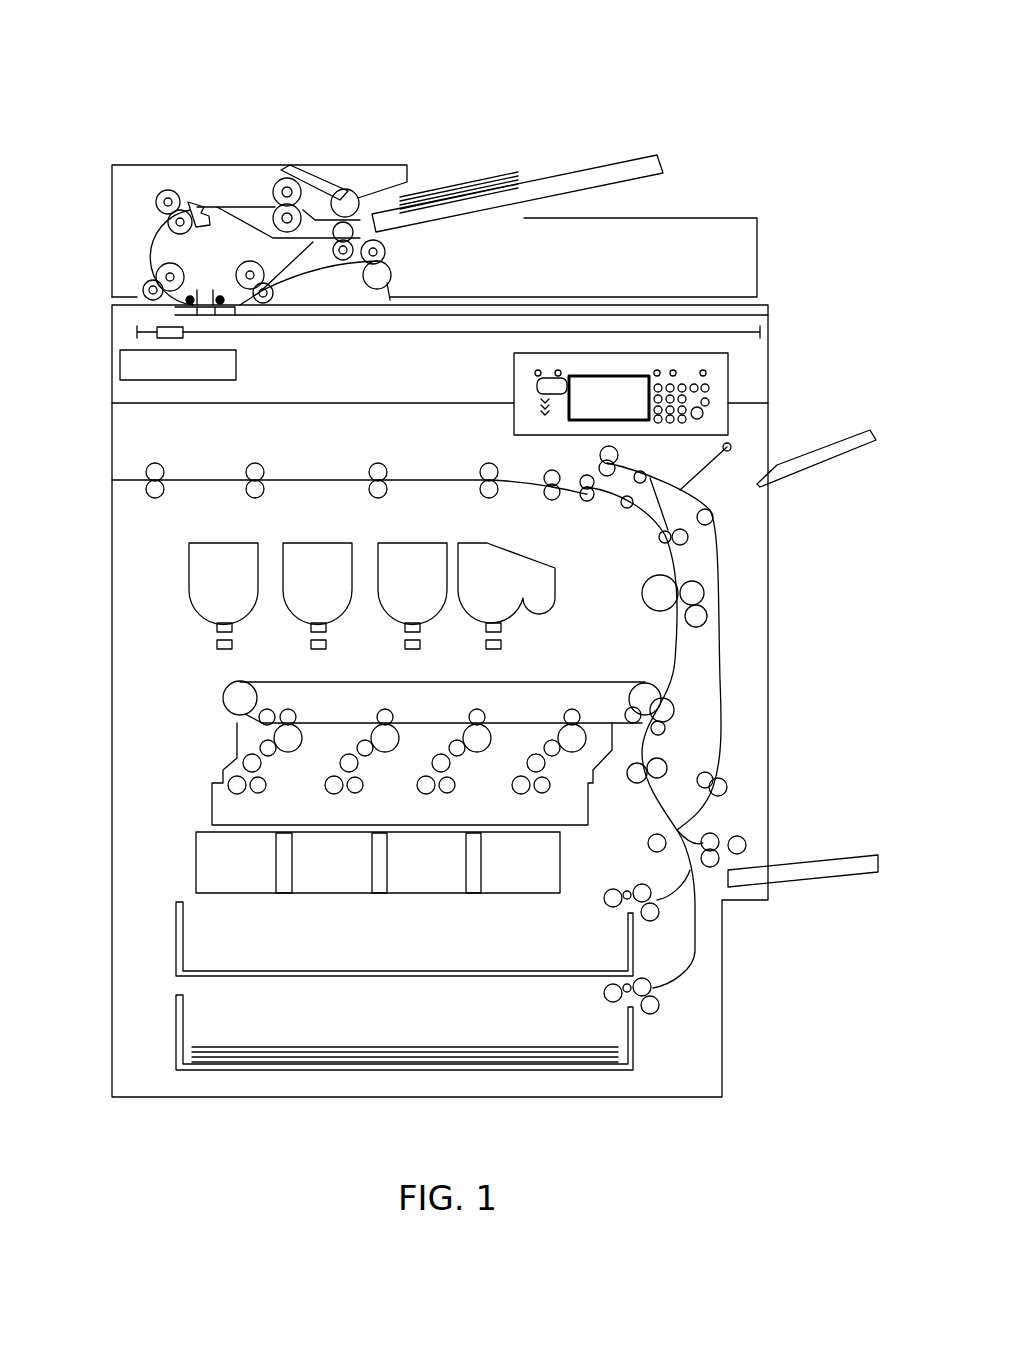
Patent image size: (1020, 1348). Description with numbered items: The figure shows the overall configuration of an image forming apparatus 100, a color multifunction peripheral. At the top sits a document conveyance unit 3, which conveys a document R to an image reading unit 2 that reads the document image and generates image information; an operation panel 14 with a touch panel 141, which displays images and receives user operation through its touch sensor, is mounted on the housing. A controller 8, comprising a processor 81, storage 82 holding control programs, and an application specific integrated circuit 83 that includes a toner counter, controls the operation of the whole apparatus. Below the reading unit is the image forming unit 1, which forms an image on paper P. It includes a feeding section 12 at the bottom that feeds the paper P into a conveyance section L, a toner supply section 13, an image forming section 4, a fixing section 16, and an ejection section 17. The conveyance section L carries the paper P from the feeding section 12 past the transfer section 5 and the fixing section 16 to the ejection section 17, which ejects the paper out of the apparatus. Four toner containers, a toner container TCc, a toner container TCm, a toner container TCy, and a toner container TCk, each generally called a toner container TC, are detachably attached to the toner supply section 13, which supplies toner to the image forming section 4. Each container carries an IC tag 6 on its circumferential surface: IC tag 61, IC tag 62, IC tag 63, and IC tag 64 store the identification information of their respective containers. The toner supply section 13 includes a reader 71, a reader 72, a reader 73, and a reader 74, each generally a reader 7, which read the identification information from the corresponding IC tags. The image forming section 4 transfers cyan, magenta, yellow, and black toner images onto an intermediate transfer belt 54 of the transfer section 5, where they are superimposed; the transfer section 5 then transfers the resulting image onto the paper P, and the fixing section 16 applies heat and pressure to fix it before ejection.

The image forming apparatus 100 is at (672, 90).
The image forming unit 1 is at (808, 547).
The image reading unit 2 is at (777, 340).
The document conveyance unit 3 is at (777, 262).
The document R is at (507, 172).
The image forming section 4 is at (153, 797).
The transfer section 5 is at (203, 690).
The intermediate transfer belt 54 is at (458, 682).
The IC tag 6 is at (356, 633).
The IC tag 61 is at (215, 628).
The IC tag 62 is at (310, 628).
The IC tag 63 is at (404, 628).
The IC tag 64 is at (503, 628).
The reader 7 is at (358, 660).
The reader 71 is at (215, 645).
The reader 72 is at (310, 645).
The reader 73 is at (404, 645).
The reader 74 is at (503, 645).
The controller 8 is at (440, 353).
The processor 81 is at (440, 353).
The storage 82 is at (440, 353).
The application specific integrated circuit 83 is at (236, 362).
The feeding section 12 is at (165, 1022).
The toner supply section 13 is at (160, 586).
The operation panel 14 is at (728, 383).
The touch panel 141 is at (594, 375).
The fixing section 16 is at (646, 570).
The ejection section 17 is at (145, 463).
The conveyance section L is at (303, 468).
The paper P is at (285, 1062).
The toner container TC is at (353, 562).
The toner container TCc is at (200, 543).
The toner container TCm is at (320, 524).
The toner container TCy is at (430, 524).
The toner container TCk is at (533, 535).